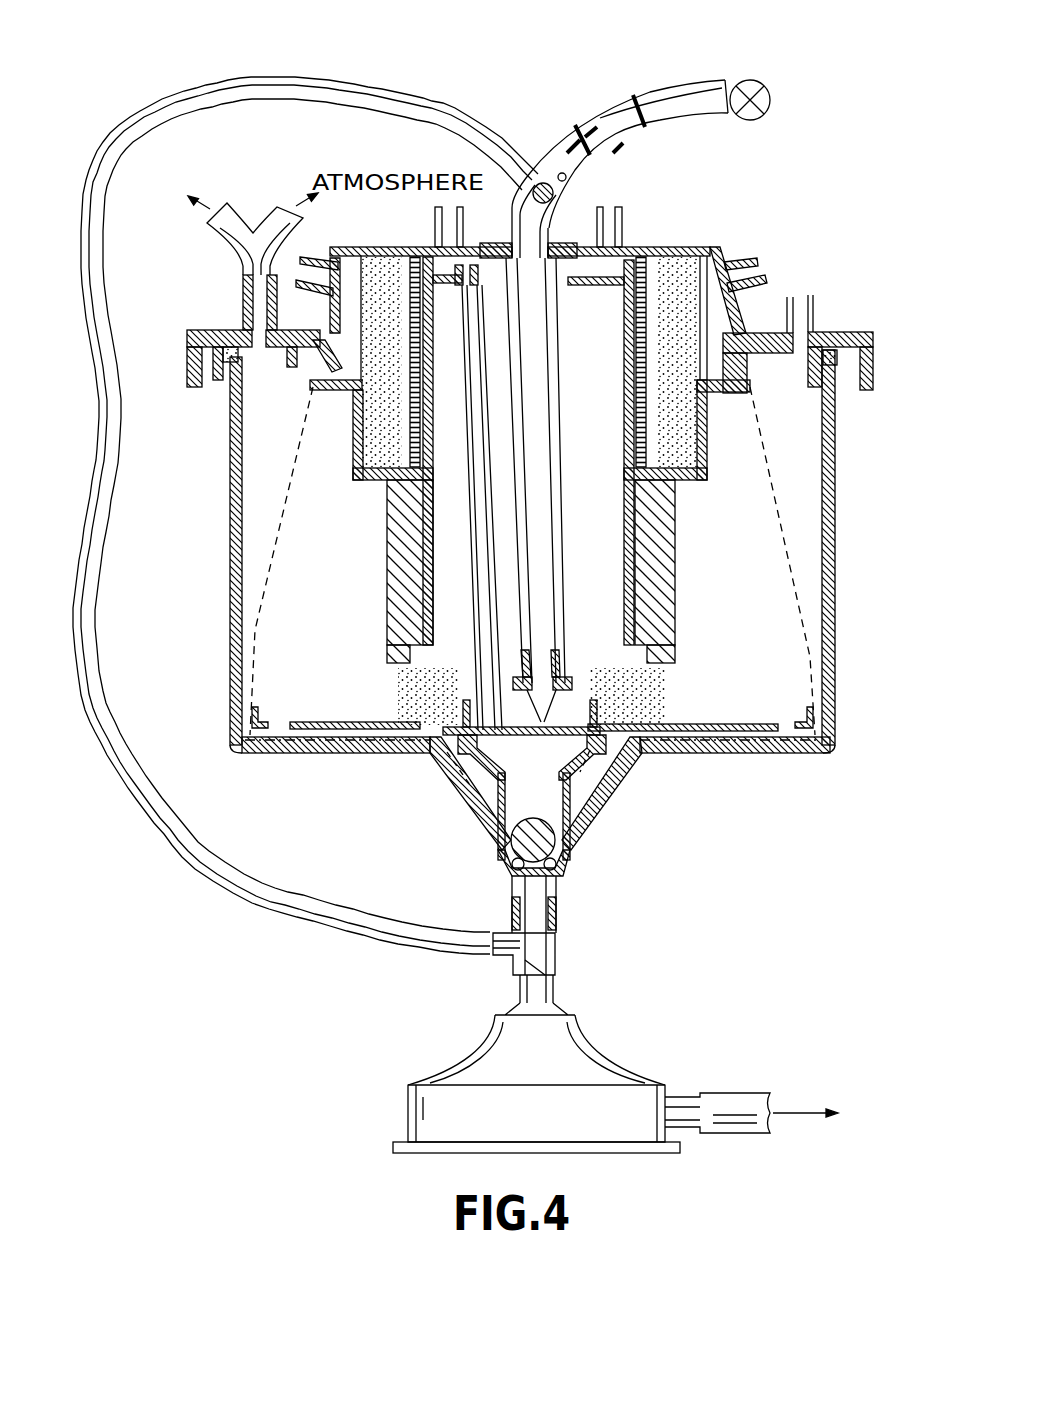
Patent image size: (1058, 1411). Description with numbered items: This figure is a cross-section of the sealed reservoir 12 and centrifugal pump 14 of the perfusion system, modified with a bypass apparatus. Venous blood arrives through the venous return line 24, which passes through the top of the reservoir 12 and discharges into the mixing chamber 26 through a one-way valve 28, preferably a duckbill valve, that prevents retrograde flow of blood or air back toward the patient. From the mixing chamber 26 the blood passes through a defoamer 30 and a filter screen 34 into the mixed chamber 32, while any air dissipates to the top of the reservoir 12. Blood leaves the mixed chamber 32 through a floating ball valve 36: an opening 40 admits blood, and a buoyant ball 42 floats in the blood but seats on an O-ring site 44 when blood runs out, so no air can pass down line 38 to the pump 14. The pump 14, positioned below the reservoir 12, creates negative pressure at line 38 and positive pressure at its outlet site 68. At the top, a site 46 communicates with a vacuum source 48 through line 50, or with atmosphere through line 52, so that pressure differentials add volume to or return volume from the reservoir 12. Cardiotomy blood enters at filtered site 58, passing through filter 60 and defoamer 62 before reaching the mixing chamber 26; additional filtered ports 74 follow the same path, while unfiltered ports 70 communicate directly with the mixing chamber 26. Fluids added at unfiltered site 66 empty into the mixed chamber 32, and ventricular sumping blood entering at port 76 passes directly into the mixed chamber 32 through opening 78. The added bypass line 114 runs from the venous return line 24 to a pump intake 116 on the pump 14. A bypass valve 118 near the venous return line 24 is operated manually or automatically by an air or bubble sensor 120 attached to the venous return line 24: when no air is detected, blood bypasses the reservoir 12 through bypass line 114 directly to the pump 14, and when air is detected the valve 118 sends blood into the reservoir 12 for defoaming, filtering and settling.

The sealed reservoir 12 is at (836, 683).
The centrifugal pump 14 is at (577, 1058).
The venous return line 24 is at (652, 91).
The mixing chamber 26 is at (603, 532).
The one-way valve 28 is at (535, 698).
The defoamer 30 is at (648, 730).
The mixed chamber 32 is at (590, 783).
The filter screen 34 is at (827, 612).
The floating ball valve 36 is at (488, 819).
The line 38 is at (557, 890).
The opening 40 is at (572, 817).
The ball 42 is at (553, 845).
The site 44 is at (516, 866).
The site 46 is at (246, 300).
The vacuum source 48 is at (184, 188).
The line 50 is at (236, 212).
The line 52 is at (283, 200).
The site 58 is at (745, 262).
The filter 60 is at (641, 256).
The defoamer 62 is at (683, 268).
The unfiltered site 66 is at (600, 222).
The outlet site 68 is at (740, 1093).
The unfiltered port 70 is at (463, 220).
The filtered port 74 is at (318, 262).
The port 76 is at (813, 312).
The opening 78 is at (822, 752).
The bypass line 114 is at (278, 78).
The pump intake 116 is at (510, 950).
The bypass valve 118 is at (547, 183).
The air or bubble sensor 120 is at (772, 98).